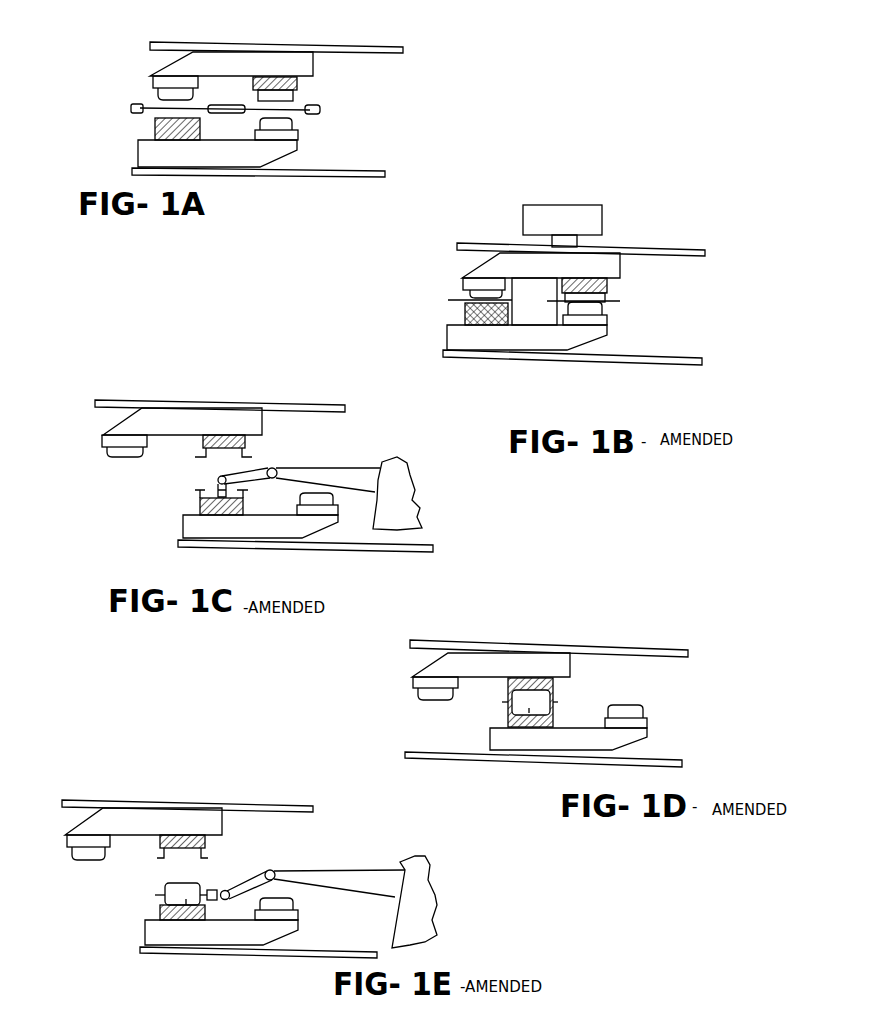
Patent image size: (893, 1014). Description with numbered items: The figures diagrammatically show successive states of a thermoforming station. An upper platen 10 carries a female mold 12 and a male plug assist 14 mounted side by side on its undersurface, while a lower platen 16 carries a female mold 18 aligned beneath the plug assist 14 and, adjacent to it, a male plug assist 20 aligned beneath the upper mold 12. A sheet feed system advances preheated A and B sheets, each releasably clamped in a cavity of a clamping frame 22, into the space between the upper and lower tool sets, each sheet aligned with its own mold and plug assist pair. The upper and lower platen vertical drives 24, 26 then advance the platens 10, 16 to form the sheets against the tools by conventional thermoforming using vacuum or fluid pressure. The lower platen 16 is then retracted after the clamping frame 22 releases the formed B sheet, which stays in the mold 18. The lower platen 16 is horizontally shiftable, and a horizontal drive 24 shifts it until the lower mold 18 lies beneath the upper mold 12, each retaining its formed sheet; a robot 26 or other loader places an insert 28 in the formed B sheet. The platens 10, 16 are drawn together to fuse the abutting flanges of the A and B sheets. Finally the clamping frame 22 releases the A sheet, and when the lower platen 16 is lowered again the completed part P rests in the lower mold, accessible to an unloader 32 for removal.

In FIG. 1A, the upper platen 10 is at (303, 63).
In FIG. 1B, the upper platen 10 is at (480, 268).
In FIG. 1C, the upper platen 10 is at (197, 418).
In FIG. 1D, the upper platen 10 is at (565, 670).
In FIG. 1E, the upper platen 10 is at (220, 828).
In FIG. 1A, the female mold 12 is at (298, 88).
In FIG. 1C, the female mold 12 is at (247, 450).
In FIG. 1A, the male plug assist 14 is at (167, 70).
In FIG. 1C, the male plug assist 14 is at (120, 428).
In FIG. 1A, the lower platen 16 is at (147, 157).
In FIG. 1C, the lower platen 16 is at (318, 527).
In FIG. 1D, the lower platen 16 is at (483, 732).
In FIG. 1E, the lower platen 16 is at (147, 923).
In FIG. 1B, the female mold 18 is at (463, 317).
In FIG. 1C, the female mold 18 is at (197, 507).
In FIG. 1E, the female mold 18 is at (208, 907).
In FIG. 1A, the male plug assist 20 is at (303, 137).
In FIG. 1A, the clamping frame 22 is at (317, 110).
In FIG. 1B, the upper platen vertical drive 24 is at (597, 218).
In FIG. 1C, the lower platen vertical drive 26 is at (398, 453).
In FIG. 1C, the insert 28 is at (247, 503).
In FIG. 1E, the unloader 32 is at (408, 867).
In FIG. 1E, the completed part P is at (158, 882).